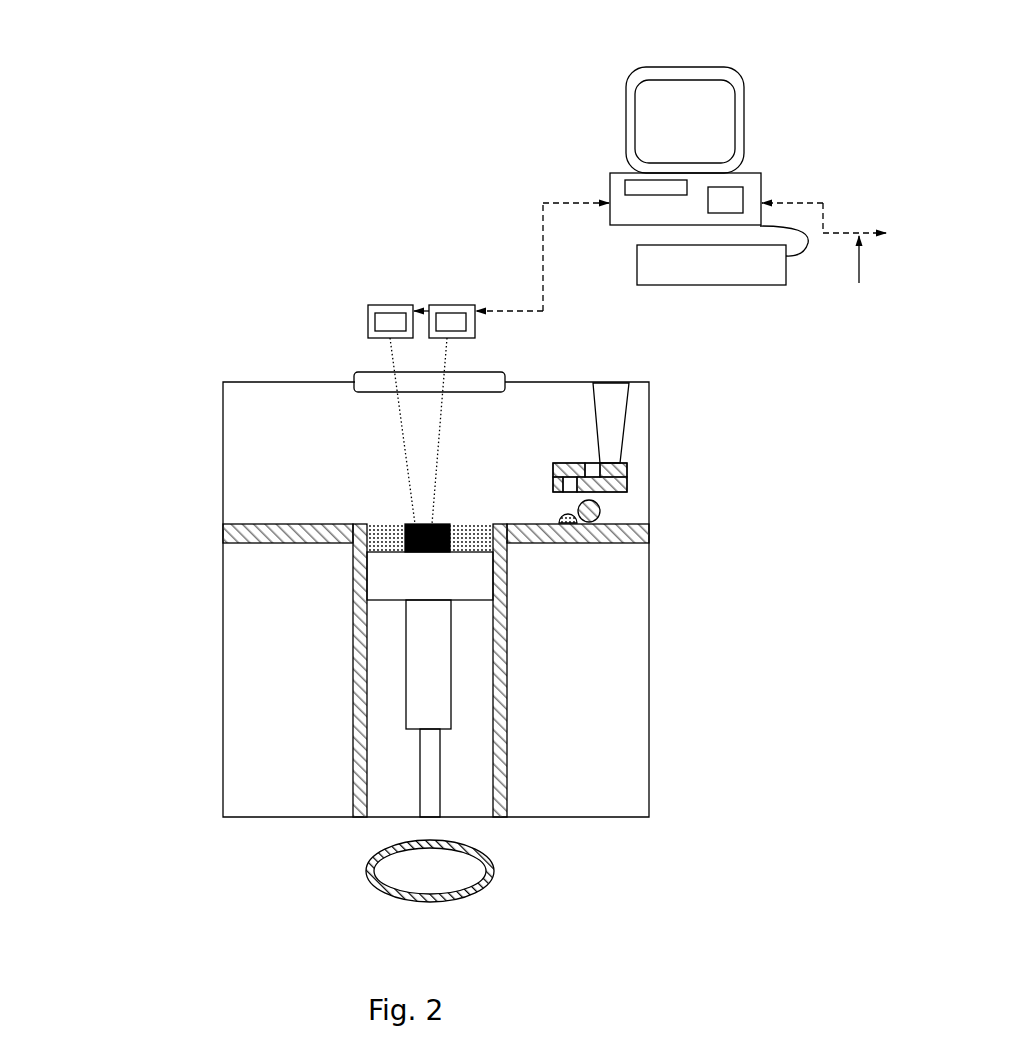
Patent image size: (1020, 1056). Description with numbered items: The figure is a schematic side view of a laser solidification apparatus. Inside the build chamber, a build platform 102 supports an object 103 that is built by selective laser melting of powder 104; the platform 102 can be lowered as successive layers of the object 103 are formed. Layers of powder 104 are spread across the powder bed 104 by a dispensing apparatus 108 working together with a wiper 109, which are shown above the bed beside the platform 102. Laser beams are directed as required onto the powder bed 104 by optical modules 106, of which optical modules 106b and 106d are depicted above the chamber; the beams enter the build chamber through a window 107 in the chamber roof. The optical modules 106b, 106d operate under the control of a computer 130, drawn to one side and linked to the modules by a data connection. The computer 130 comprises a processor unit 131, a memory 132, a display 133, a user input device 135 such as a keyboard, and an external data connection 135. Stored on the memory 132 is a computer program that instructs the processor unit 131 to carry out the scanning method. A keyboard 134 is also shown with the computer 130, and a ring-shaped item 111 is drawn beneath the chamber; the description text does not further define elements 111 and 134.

The build platform 102 is at (467, 572).
The object 103 is at (403, 552).
The powder 104 is at (385, 540).
The optical module 106 is at (337, 357).
The optical module 106b is at (390, 305).
The optical module 106d is at (450, 305).
The window 107 is at (355, 362).
The dispensing apparatus 108 is at (628, 475).
The wiper 109 is at (602, 507).
The ring component 111 is at (492, 878).
The computer 130 is at (649, 177).
The processor unit 131 is at (728, 193).
The memory 132 is at (638, 178).
The display 133 is at (714, 67).
The keyboard 134 is at (735, 285).
The user input device 135 is at (856, 274).